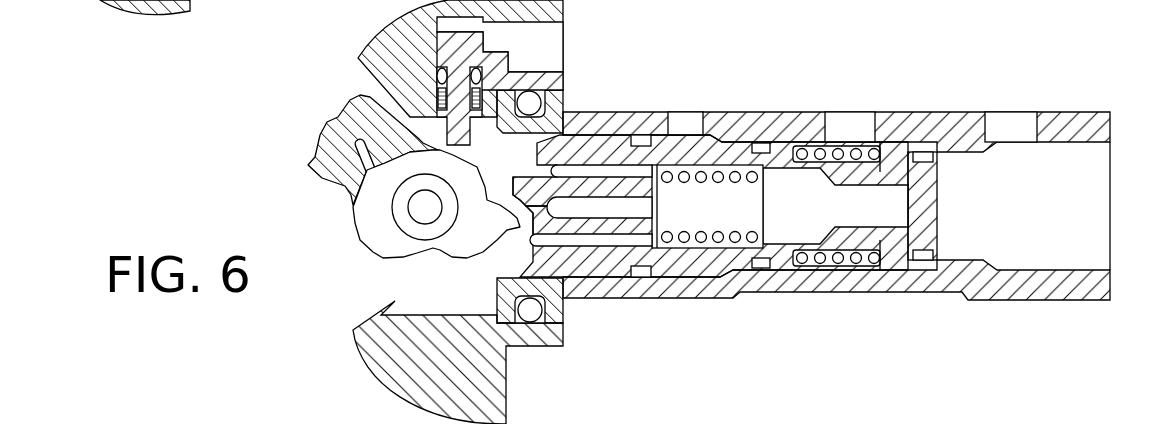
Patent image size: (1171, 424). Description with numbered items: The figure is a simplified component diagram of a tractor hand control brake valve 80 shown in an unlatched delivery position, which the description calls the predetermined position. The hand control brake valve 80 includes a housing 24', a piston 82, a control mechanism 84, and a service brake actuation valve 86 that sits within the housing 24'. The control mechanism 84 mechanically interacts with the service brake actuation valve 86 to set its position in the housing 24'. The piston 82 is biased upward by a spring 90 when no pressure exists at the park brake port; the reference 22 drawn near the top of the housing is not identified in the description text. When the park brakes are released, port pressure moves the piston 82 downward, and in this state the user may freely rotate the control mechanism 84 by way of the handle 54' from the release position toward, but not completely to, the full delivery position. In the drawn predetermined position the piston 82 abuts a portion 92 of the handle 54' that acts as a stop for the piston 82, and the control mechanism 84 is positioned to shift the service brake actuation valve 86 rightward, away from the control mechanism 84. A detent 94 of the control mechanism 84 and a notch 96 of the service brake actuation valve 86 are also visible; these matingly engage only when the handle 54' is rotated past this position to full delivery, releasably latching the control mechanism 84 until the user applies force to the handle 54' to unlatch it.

The housing 22 is at (543, 33).
The housing 24' is at (851, 177).
The hand control brake valve 80 is at (871, 66).
The piston 82 is at (480, 42).
The control mechanism 84 is at (403, 258).
The service brake actuation valve 86 is at (740, 268).
The spring 90 is at (436, 96).
The portion of the handle 92 is at (445, 152).
The detent 94 is at (504, 197).
The notch 96 is at (515, 224).
The handle 54' is at (363, 171).